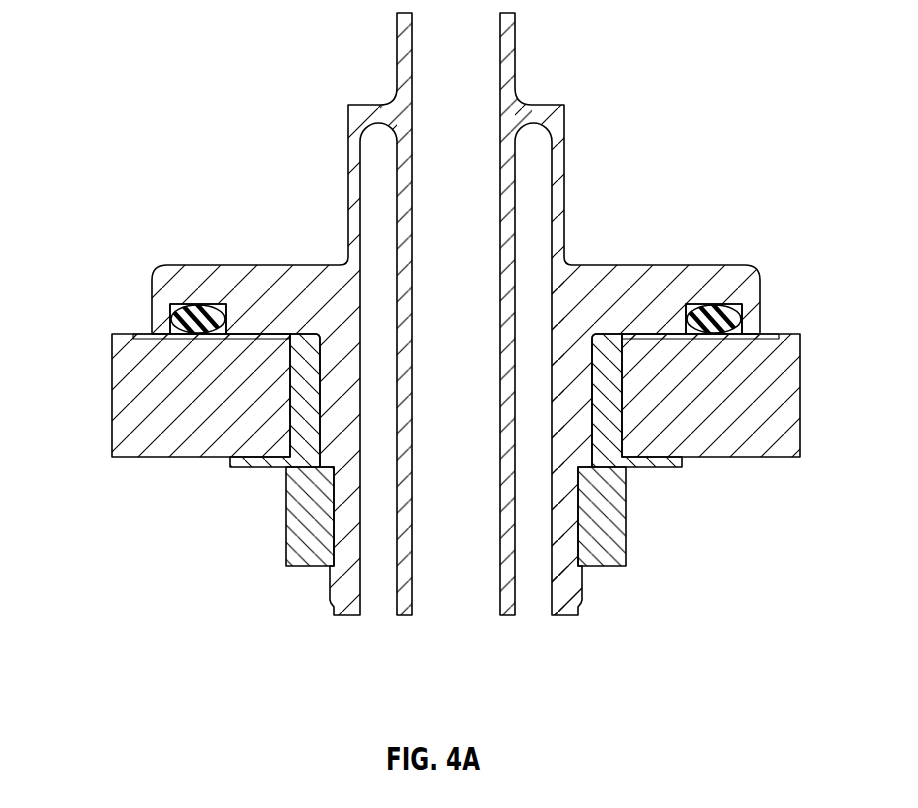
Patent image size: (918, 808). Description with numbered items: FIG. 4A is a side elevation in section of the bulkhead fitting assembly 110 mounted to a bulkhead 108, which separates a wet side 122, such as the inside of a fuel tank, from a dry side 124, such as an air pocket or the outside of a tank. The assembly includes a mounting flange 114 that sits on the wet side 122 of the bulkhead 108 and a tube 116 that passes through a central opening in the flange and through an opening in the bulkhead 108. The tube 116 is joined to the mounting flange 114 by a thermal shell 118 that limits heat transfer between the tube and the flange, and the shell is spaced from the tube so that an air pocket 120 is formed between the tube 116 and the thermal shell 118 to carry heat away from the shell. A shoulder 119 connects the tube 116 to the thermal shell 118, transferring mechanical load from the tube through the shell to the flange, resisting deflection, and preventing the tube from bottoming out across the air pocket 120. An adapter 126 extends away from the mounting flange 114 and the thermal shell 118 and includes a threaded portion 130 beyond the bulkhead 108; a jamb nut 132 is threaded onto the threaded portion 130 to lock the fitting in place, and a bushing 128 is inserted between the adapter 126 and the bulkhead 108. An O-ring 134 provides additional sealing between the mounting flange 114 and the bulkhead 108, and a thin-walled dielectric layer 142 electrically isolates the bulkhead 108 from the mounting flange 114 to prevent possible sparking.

The bulkhead fitting assembly 110 is at (259, 52).
The bulkhead 108 is at (112, 393).
The mounting flange 114 is at (205, 265).
The tube 116 is at (412, 428).
The thermal shell 118 is at (348, 220).
The shoulder 119 is at (372, 114).
The air pocket 120 is at (377, 162).
The wet side 122 is at (676, 188).
The dry side 124 is at (790, 530).
The adapter 126 is at (552, 365).
The bushing 128 is at (657, 468).
The threaded portion 130 is at (578, 600).
The jamb nut 132 is at (287, 516).
The O-ring 134 is at (742, 316).
The thin-walled dielectric layer 142 is at (143, 332).